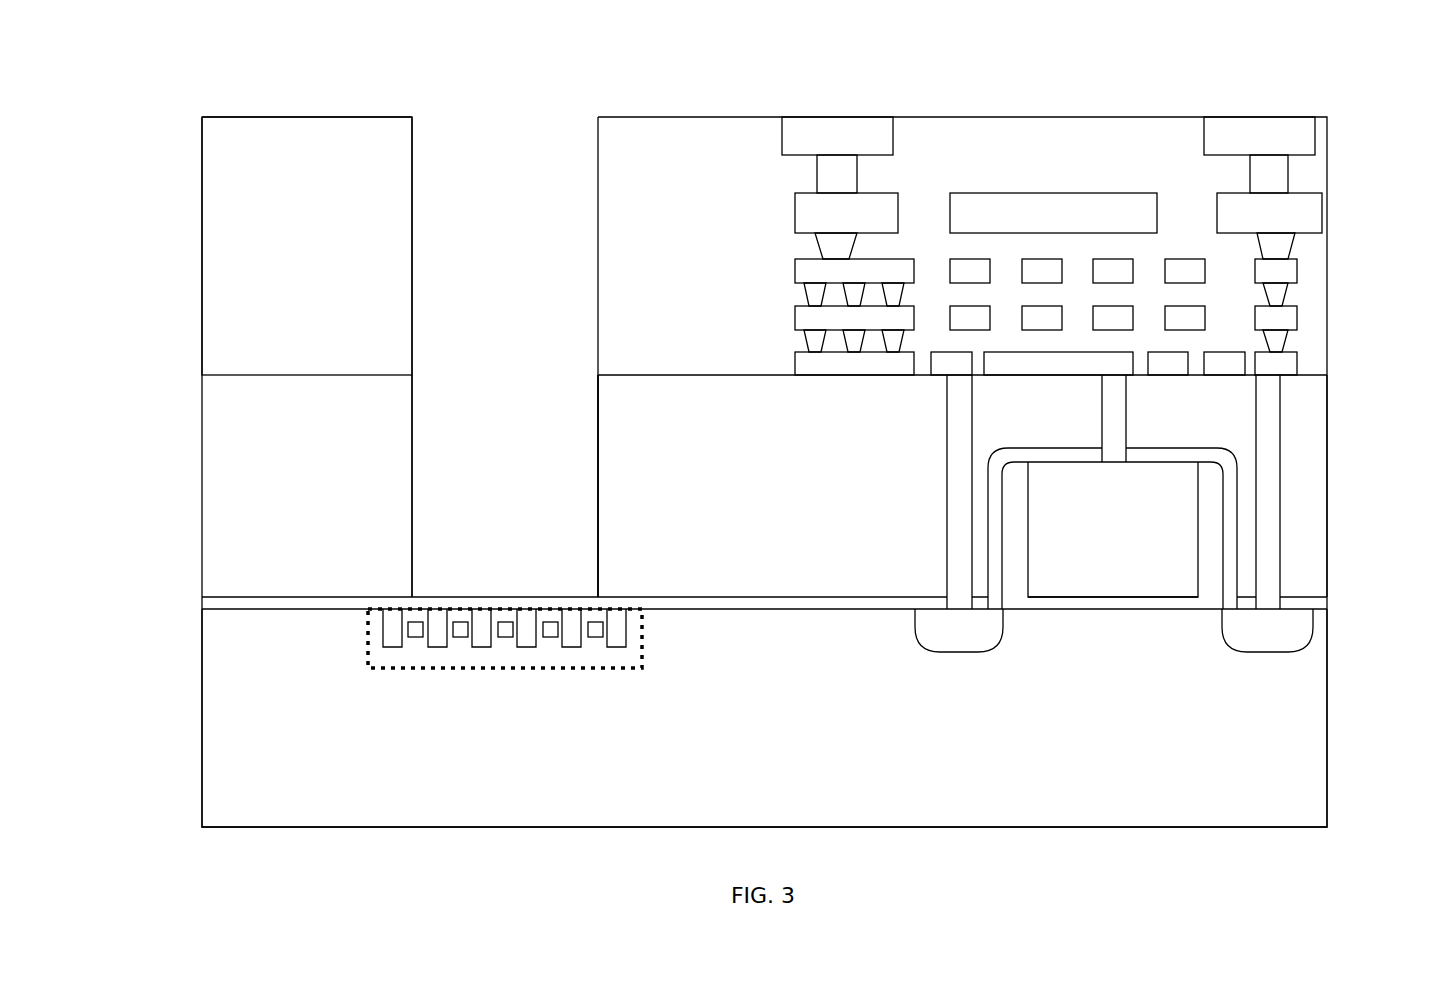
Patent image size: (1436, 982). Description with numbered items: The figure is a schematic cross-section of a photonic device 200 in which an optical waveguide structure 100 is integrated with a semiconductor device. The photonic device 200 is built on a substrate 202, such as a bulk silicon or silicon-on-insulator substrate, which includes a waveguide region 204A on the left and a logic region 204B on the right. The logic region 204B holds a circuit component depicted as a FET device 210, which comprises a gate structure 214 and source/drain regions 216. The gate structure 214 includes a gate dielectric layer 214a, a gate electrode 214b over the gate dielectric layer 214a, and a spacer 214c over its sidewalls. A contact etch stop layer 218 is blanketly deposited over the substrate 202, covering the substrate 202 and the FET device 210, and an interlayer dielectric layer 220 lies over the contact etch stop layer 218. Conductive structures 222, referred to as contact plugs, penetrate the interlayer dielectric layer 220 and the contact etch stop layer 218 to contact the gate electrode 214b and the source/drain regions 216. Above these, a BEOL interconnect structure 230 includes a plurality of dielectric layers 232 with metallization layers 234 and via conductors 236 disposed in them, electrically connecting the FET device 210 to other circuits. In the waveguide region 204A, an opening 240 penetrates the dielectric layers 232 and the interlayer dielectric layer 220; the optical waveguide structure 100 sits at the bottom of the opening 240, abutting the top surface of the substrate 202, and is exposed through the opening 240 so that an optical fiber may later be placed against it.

The photonic device 200 is at (183, 66).
The waveguide region 204A is at (680, 112).
The logic region 204B is at (705, 112).
The BEOL interconnect structure 230 is at (199, 118).
The dielectric layers 232 is at (325, 260).
The metallization layers 234 is at (865, 226).
The via conductors 236 is at (1278, 173).
The opening 240 is at (523, 363).
The interlayer dielectric layer 220 is at (866, 500).
The conductive structures 222 is at (955, 410).
The gate structure 214 is at (1212, 528).
The gate dielectric layer 214a is at (1138, 602).
The gate electrode 214b is at (1212, 529).
The spacer 214c is at (1015, 483).
The contact etch stop layer 218 is at (210, 602).
The source/drain regions 216 is at (978, 642).
The FET device 210 is at (1313, 655).
The optical waveguide structure 100 is at (368, 641).
The substrate 202 is at (783, 731).